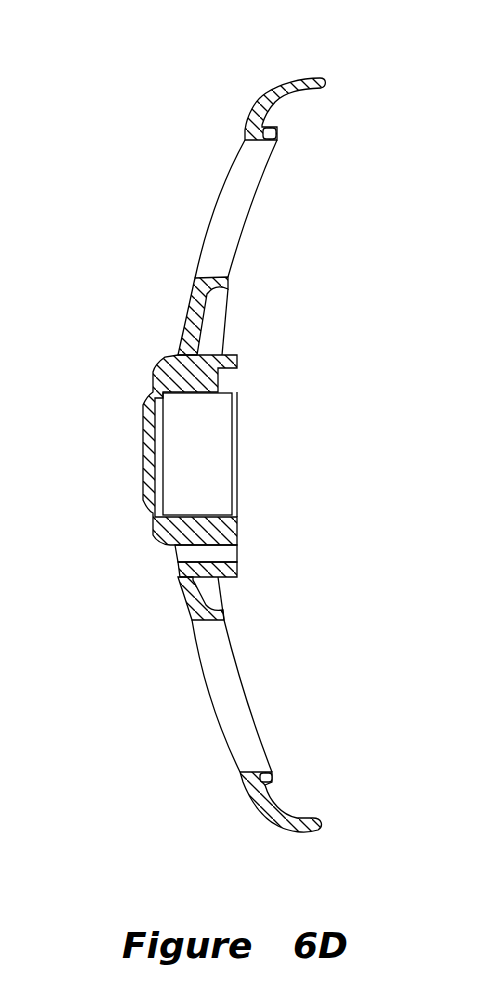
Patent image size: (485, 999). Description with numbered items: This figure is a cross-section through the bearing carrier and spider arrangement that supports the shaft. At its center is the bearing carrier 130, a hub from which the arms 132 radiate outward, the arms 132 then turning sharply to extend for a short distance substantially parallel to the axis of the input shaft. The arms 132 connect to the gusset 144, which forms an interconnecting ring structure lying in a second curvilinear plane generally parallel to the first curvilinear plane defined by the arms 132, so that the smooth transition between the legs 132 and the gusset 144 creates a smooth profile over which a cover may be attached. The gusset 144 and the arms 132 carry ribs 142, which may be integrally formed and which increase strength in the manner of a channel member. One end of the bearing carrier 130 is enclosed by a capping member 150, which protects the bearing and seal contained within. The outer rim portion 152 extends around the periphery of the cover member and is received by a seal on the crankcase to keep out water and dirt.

The bearing carrier 130 is at (208, 455).
The arms 132 is at (217, 717).
The ribs 142 is at (237, 207).
The gusset 144 is at (280, 83).
The capping member 150 is at (142, 467).
The outer rim portion 152 is at (200, 250).